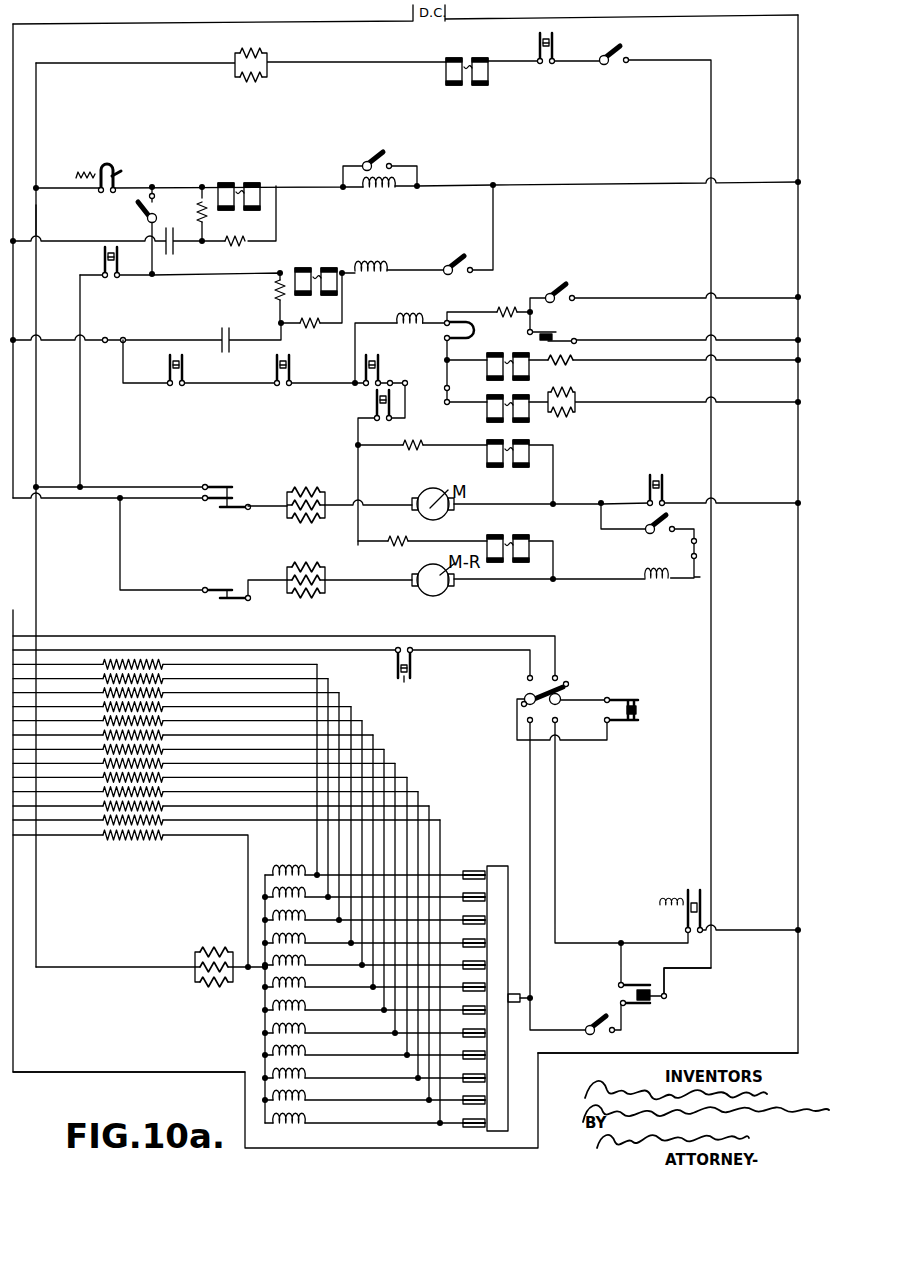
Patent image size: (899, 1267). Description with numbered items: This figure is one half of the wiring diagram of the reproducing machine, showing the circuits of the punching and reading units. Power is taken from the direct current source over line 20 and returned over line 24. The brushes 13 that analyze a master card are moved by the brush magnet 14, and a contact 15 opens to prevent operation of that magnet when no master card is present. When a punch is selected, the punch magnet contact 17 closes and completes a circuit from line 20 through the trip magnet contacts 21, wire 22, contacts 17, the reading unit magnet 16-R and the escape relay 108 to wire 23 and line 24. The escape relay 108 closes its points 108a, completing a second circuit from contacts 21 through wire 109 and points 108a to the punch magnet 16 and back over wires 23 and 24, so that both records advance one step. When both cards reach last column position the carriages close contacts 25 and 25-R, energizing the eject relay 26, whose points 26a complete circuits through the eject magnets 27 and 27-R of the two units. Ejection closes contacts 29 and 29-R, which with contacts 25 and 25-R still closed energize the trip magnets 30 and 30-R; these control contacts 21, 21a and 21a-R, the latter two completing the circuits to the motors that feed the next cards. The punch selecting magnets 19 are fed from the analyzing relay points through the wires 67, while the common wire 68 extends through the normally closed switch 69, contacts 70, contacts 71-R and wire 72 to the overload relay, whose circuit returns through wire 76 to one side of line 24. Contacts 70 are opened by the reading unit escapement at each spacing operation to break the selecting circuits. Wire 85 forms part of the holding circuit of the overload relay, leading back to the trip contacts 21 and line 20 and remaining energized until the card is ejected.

The brushes 13 is at (475, 875).
The brush magnet 14 is at (488, 76).
The contact 15 is at (547, 32).
The punch magnet 16 is at (258, 195).
The magnet 16-R is at (332, 272).
The punch magnet contact 17 is at (105, 268).
The punch selecting magnets 19 is at (287, 874).
The line 20 is at (196, 20).
The trip magnet contacts 21 is at (240, 490).
The contacts 21a is at (249, 502).
The contacts 21a-R is at (242, 590).
The wire 22 is at (80, 410).
The wire 23 is at (585, 183).
The line 24 is at (798, 35).
The contacts 25 is at (280, 372).
The contacts 25-R is at (176, 372).
The eject relay 26 is at (407, 330).
The points 26a is at (463, 320).
The eject magnet 27 is at (522, 370).
The eject magnet 27-R is at (525, 410).
The contacts 29 is at (371, 368).
The contacts 29-R is at (387, 398).
The trip magnet 30 is at (522, 456).
The trip magnet 30-R is at (527, 548).
The wire 67 is at (298, 678).
The common wire 68 is at (103, 640).
The switch 69 is at (545, 682).
The contacts 70 is at (640, 710).
The contacts 71-R is at (415, 677).
The wire 72 is at (300, 648).
The wire 76 is at (85, 1060).
The wire 85 is at (36, 878).
The escape relay 108 is at (78, 176).
The relay points 108a is at (114, 178).
The wire 109 is at (36, 220).